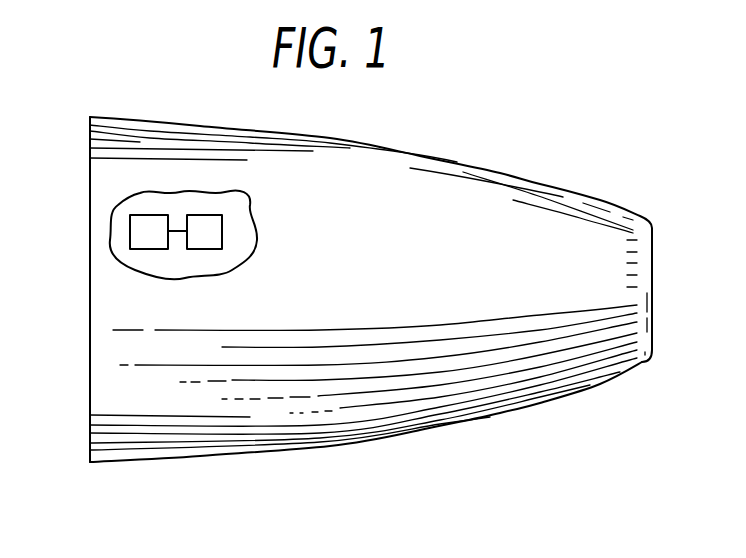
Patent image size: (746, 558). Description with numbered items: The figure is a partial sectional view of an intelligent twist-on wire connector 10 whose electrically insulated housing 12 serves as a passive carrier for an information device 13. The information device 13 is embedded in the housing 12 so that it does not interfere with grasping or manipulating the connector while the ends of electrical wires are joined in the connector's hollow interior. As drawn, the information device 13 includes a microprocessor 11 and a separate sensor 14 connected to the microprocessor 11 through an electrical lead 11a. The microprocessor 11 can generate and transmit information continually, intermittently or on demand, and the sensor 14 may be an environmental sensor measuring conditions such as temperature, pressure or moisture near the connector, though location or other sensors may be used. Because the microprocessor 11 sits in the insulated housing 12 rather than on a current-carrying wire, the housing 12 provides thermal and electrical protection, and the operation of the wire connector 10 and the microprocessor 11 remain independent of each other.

The twist-on wire connector 10 is at (552, 165).
The microprocessor 11 is at (148, 232).
The electrical lead 11a is at (177, 233).
The electrically insulated housing 12 is at (317, 445).
The information device 13 is at (125, 260).
The sensor 14 is at (198, 222).